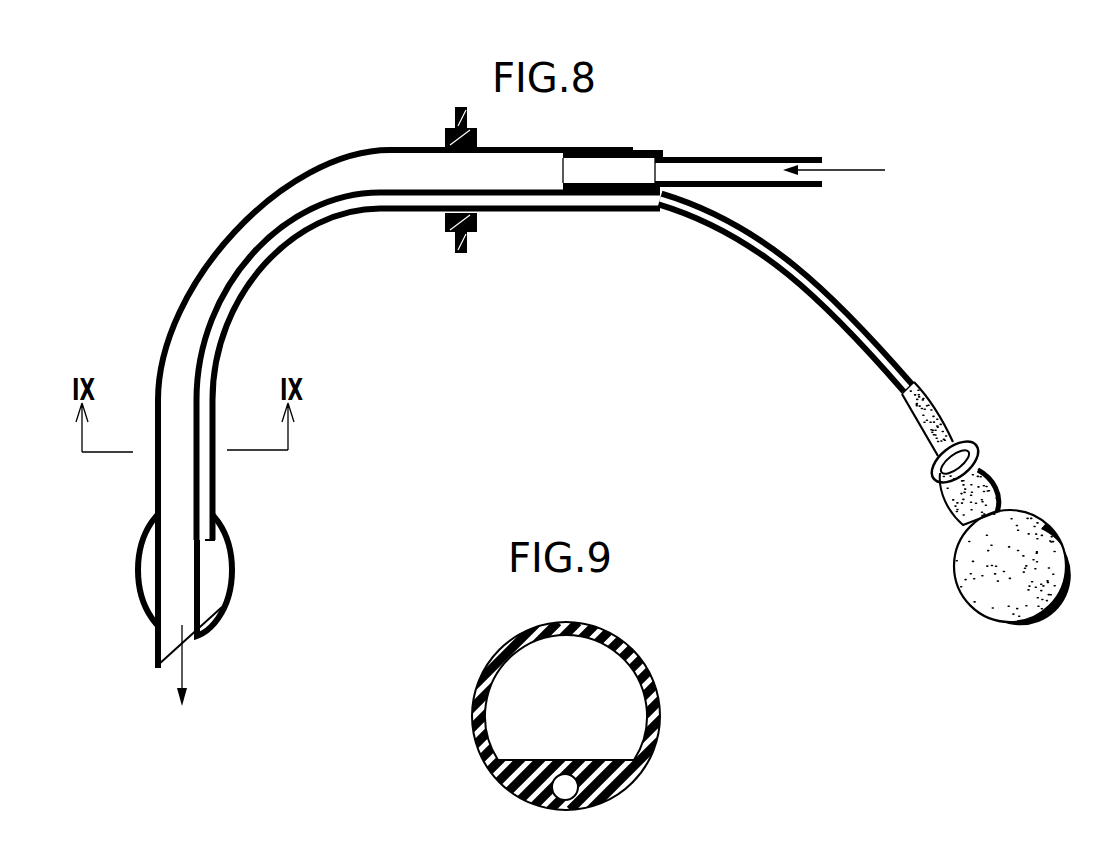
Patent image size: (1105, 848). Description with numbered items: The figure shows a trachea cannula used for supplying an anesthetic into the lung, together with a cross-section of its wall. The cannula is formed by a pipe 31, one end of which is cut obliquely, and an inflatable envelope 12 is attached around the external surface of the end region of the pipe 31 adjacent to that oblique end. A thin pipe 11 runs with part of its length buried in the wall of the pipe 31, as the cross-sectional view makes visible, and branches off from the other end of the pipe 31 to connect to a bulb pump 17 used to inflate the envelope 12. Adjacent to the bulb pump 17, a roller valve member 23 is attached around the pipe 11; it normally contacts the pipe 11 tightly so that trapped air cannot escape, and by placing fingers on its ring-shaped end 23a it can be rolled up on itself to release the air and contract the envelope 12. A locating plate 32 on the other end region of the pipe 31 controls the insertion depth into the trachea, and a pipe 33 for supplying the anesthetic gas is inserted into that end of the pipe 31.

In FIG. 8, the pipe 11 is at (243, 300).
In FIG. 9, the pipe 11 is at (597, 788).
In FIG. 8, the envelope 12 is at (228, 562).
In FIG. 8, the bulb pump 17 is at (963, 563).
In FIG. 8, the roller valve member 23 is at (993, 483).
In FIG. 8, the ring-shaped end 23a is at (1036, 446).
In FIG. 8, the pipe 31 is at (235, 218).
In FIG. 9, the pipe 31 is at (627, 648).
In FIG. 8, the locating plate 32 is at (457, 113).
In FIG. 8, the pipe 33 is at (775, 156).